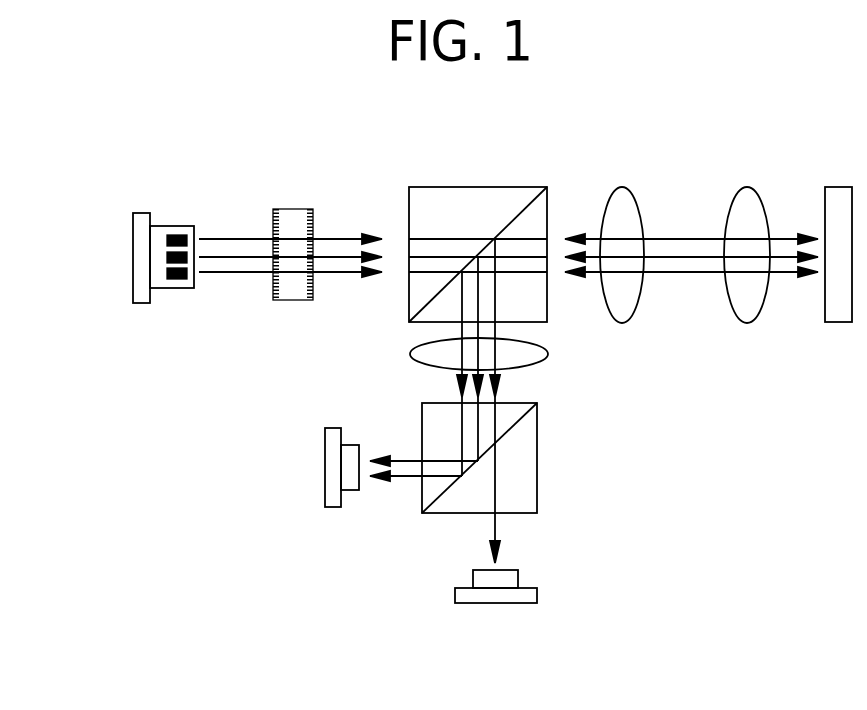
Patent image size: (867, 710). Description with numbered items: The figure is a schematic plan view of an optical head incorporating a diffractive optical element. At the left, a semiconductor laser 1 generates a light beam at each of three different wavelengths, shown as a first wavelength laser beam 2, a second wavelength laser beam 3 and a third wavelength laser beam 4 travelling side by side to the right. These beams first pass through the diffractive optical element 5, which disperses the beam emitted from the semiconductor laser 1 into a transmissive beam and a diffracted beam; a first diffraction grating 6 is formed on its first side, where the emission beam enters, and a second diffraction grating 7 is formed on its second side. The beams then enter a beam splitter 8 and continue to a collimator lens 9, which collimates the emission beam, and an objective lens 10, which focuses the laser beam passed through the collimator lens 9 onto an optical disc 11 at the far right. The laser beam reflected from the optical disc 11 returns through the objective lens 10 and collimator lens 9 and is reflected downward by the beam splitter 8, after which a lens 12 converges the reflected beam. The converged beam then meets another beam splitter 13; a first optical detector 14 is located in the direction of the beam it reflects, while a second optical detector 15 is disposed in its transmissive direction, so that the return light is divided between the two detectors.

The semiconductor laser 1 is at (133, 295).
The first wavelength laser beam 2 is at (223, 273).
The second wavelength laser beam 3 is at (248, 258).
The third wavelength laser beam 4 is at (223, 237).
The diffractive optical element 5 is at (296, 198).
The first diffraction grating 6 is at (277, 230).
The second diffraction grating 7 is at (320, 225).
The beam splitter 8 is at (473, 202).
The collimator lens 9 is at (622, 208).
The objective lens 10 is at (750, 200).
The optical disc 11 is at (837, 200).
The lens 12 is at (533, 353).
The beam splitter 13 is at (527, 470).
The first optical detector 14 is at (325, 472).
The second optical detector 15 is at (503, 603).